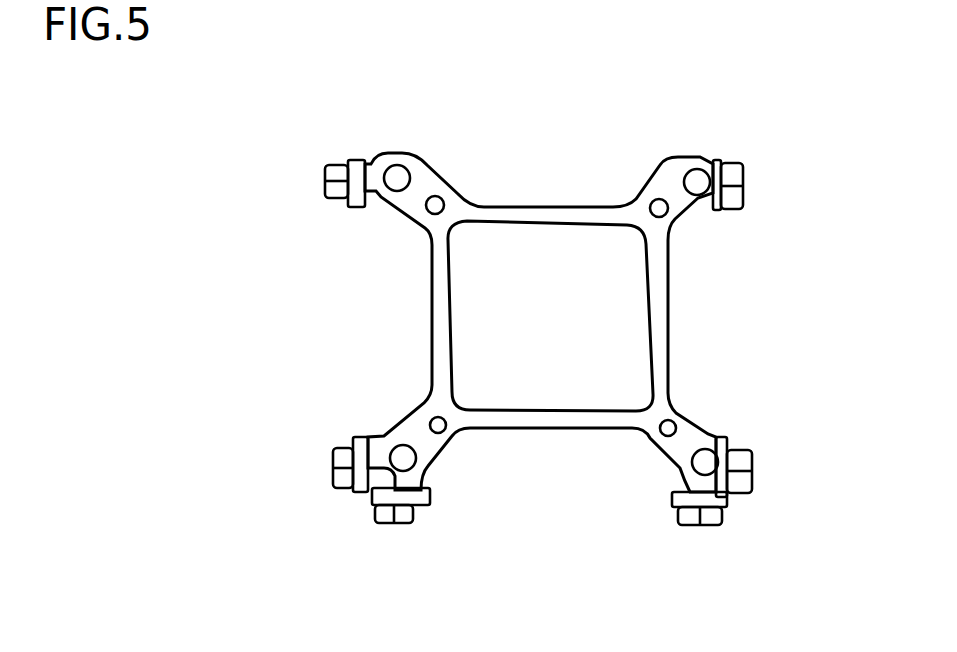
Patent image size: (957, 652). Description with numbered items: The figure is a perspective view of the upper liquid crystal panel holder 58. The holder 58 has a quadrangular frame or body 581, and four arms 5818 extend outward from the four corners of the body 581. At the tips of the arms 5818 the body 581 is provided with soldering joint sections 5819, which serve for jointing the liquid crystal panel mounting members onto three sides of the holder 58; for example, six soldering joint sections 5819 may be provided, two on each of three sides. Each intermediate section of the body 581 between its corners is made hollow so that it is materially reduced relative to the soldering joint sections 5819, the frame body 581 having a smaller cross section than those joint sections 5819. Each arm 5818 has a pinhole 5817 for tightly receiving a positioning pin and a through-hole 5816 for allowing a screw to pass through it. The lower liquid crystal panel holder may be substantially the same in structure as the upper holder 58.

The upper liquid crystal panel holder 58 is at (545, 144).
The quadrangular body 581 is at (658, 348).
The through-hole 5816 is at (697, 182).
The pinhole 5817 is at (667, 210).
The arm 5818 is at (682, 200).
The soldering joint section 5819 is at (738, 200).